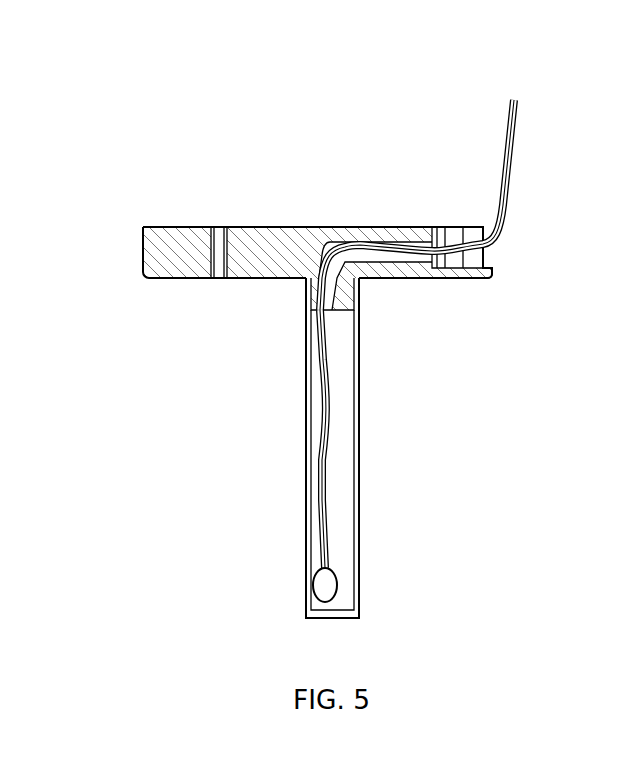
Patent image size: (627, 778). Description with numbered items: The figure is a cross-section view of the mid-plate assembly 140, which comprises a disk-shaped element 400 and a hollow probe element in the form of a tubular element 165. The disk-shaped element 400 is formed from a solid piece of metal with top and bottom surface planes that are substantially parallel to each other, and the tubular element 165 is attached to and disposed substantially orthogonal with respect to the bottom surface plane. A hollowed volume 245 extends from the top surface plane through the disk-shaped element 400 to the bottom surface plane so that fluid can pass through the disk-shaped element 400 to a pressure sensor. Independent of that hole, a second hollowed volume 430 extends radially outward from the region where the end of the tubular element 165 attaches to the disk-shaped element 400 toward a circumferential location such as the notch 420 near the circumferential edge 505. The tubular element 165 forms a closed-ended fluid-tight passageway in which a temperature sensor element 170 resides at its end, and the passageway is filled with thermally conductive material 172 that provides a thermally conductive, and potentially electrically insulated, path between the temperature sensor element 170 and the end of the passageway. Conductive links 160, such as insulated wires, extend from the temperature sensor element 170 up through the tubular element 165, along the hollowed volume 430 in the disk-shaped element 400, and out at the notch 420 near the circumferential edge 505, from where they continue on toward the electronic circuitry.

The mid-plate assembly 140 is at (162, 106).
The disk-shaped element 400 is at (143, 262).
The hollowed volume 245 is at (229, 212).
The hollowed volume 430 is at (423, 243).
The notch 420 is at (520, 264).
The circumferential edge 505 is at (494, 300).
The conductive links 160 is at (517, 128).
The tubular element 165 is at (306, 453).
The thermally conductive material 172 is at (314, 543).
The temperature sensor element 170 is at (313, 592).